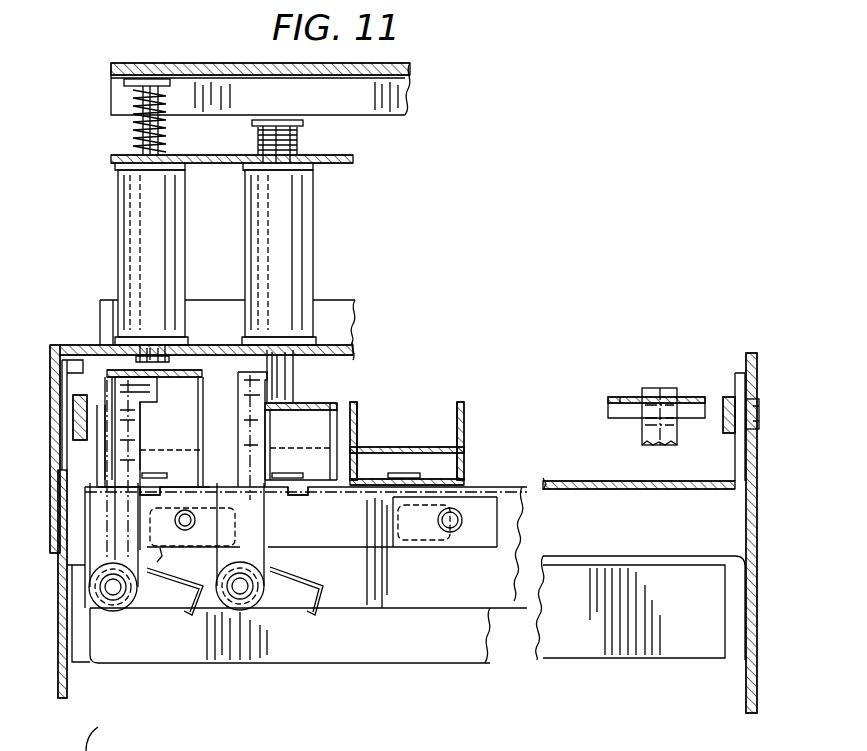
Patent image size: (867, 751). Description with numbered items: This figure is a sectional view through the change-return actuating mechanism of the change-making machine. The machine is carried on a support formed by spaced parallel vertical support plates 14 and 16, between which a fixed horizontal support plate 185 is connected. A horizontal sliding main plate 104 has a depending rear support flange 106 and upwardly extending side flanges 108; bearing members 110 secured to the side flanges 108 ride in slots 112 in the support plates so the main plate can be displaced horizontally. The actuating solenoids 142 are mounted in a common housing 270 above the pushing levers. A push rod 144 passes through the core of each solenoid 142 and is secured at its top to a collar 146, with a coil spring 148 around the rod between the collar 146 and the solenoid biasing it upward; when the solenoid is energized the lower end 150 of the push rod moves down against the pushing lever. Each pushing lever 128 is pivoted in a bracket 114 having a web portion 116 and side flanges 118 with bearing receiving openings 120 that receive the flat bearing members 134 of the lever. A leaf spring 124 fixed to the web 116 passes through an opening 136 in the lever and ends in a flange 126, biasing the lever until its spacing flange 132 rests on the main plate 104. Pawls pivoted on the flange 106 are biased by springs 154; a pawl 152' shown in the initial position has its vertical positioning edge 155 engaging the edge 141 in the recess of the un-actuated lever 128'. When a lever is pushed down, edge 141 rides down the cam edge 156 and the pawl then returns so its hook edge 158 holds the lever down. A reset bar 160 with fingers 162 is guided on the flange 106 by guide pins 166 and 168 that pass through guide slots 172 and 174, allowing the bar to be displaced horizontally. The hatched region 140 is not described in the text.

The common housing 270 is at (220, 62).
The collar 146 is at (128, 88).
The push rod 144 is at (146, 125).
The coil spring 148 is at (133, 142).
The actuating solenoid 142 is at (118, 230).
The lower end of push rod 150 is at (165, 358).
The vertical positioning edge 155 is at (157, 378).
The pushing lever 128' is at (178, 353).
The edge 141 is at (152, 378).
The cam edge 156 is at (143, 404).
The hook edge 158 is at (147, 410).
The leaf spring 124 is at (152, 475).
The side flange 108 is at (78, 386).
The spacer block 140 is at (73, 408).
The bearing member 110 is at (62, 406).
The slot 112 is at (58, 455).
The bracket 114 is at (97, 467).
The pawl 152' is at (73, 535).
The spring 154 is at (182, 585).
The guide slot 174 is at (162, 548).
The vertical support plate 16 is at (58, 636).
The reset bar 160 is at (484, 528).
The finger 162 is at (185, 494).
The guide pin 168 is at (188, 525).
The guide slot 172 is at (406, 548).
The guide pin 166 is at (451, 532).
The rear support flange 106 is at (412, 597).
The side flange 118 is at (357, 412).
The bearing receiving opening 120 is at (357, 437).
The bearing member 134 is at (464, 450).
The web portion 116 is at (440, 478).
The vertical support plate 14 is at (757, 540).
The sliding main plate 104 is at (616, 482).
The spacing flange 132 is at (607, 413).
The opening 136 is at (643, 388).
The flange 126 is at (666, 387).
The pushing lever 128 is at (600, 380).
The horizontal support plate 185 is at (686, 558).